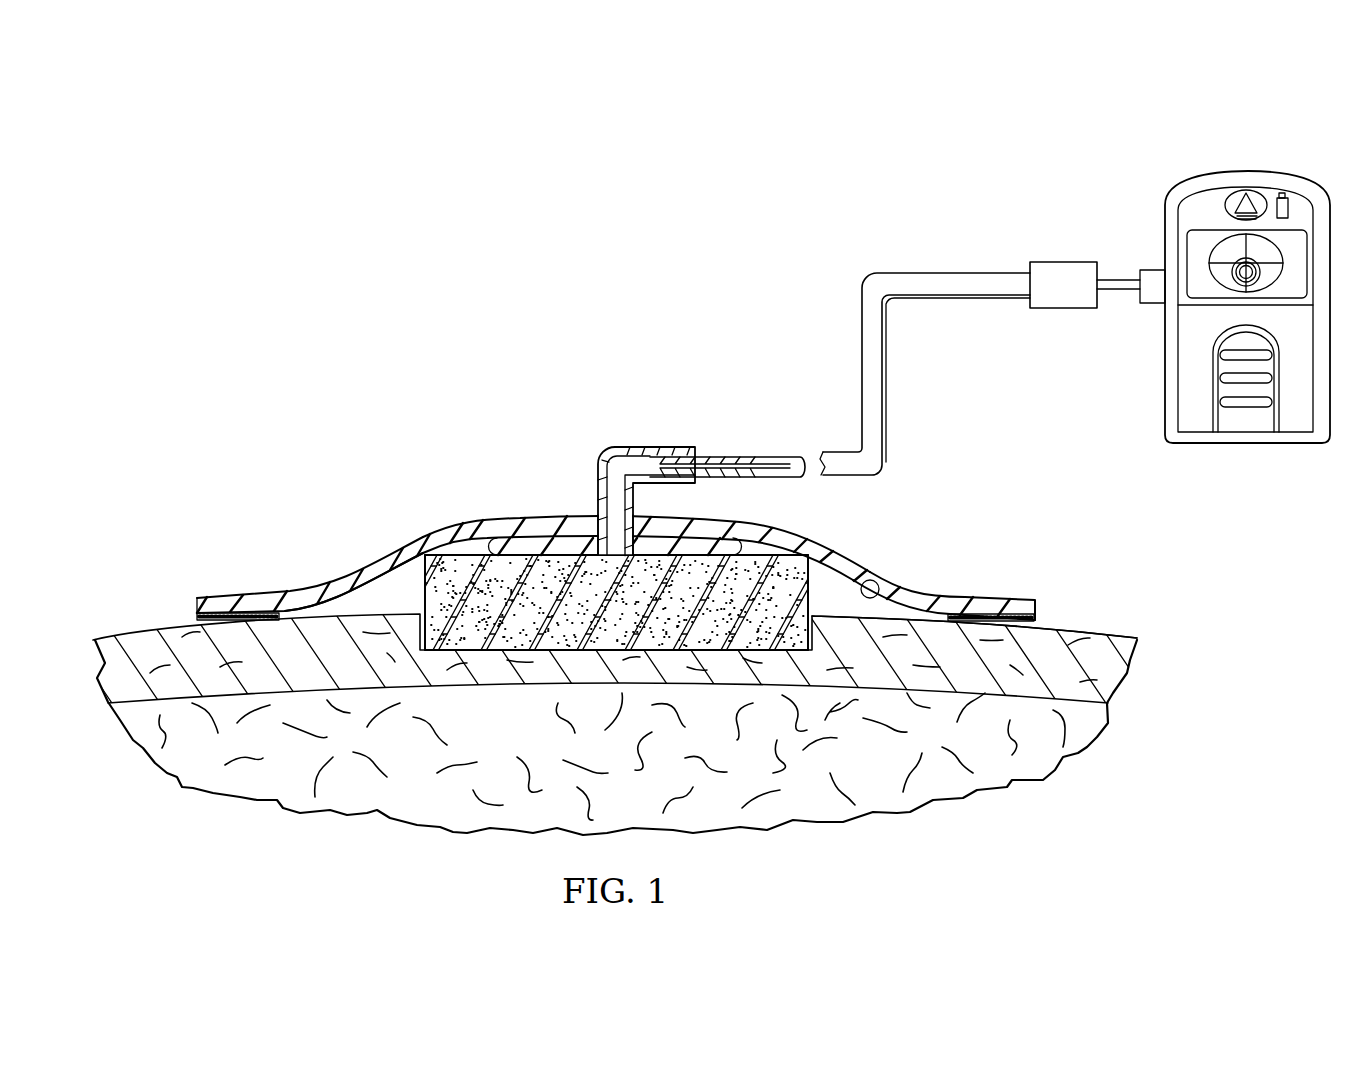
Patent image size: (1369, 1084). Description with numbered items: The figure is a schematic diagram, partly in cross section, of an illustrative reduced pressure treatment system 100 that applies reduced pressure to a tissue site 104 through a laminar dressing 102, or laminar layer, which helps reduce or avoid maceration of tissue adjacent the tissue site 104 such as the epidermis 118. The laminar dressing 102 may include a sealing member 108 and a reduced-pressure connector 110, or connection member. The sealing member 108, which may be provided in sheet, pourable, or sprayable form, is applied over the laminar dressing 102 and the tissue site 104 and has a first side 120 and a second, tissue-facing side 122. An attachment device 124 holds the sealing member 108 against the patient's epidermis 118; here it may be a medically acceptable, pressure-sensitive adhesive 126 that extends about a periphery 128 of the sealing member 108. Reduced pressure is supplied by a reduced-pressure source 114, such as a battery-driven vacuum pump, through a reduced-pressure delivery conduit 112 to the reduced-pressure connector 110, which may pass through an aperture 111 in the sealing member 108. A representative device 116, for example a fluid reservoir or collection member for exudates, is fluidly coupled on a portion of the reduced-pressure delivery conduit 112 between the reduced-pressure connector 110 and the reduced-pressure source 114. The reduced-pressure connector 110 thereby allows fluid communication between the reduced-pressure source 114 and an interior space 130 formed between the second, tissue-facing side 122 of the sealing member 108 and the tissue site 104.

The reduced pressure treatment system 100 is at (436, 366).
The laminar dressing 102 is at (416, 590).
The tissue site 104 is at (500, 652).
The sealing member 108 is at (460, 520).
The reduced-pressure connector 110 is at (647, 448).
The aperture 111 is at (598, 516).
The reduced-pressure delivery conduit 112 is at (788, 457).
The reduced-pressure source 114 is at (1290, 170).
The representative device 116 is at (1060, 262).
The epidermis 118 is at (95, 640).
The first side 120 is at (238, 597).
The second, tissue-facing side 122 is at (882, 588).
The attachment device 124 is at (1038, 620).
The pressure-sensitive adhesive 126 is at (196, 618).
The periphery 128 is at (1000, 597).
The interior space 130 is at (375, 596).